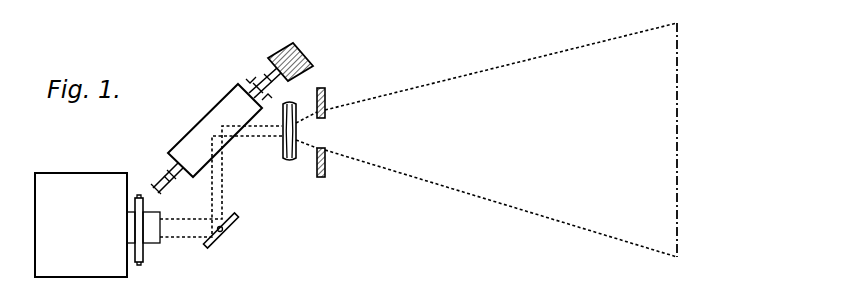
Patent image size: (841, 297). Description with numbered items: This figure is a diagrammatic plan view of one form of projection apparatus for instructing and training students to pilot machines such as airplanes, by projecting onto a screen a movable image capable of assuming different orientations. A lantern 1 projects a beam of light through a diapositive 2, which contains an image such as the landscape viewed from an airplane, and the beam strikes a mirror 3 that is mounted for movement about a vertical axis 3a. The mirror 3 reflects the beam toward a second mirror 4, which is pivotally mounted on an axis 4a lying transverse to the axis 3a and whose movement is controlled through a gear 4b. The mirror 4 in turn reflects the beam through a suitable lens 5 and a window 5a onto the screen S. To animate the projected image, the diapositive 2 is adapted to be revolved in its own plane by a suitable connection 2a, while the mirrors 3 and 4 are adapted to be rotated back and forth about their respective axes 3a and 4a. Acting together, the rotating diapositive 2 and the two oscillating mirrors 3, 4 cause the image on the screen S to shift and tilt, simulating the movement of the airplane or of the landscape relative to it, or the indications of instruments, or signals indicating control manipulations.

The lantern 1 is at (67, 187).
The diapositive 2 is at (143, 253).
The connection 2a is at (143, 263).
The mirror 3 is at (238, 218).
The vertical axis 3a is at (226, 232).
The mirror 4 is at (212, 116).
The axis 4a is at (270, 63).
The gear 4b is at (306, 62).
The lens 5 is at (288, 160).
The window 5a is at (323, 113).
The screen S is at (680, 115).